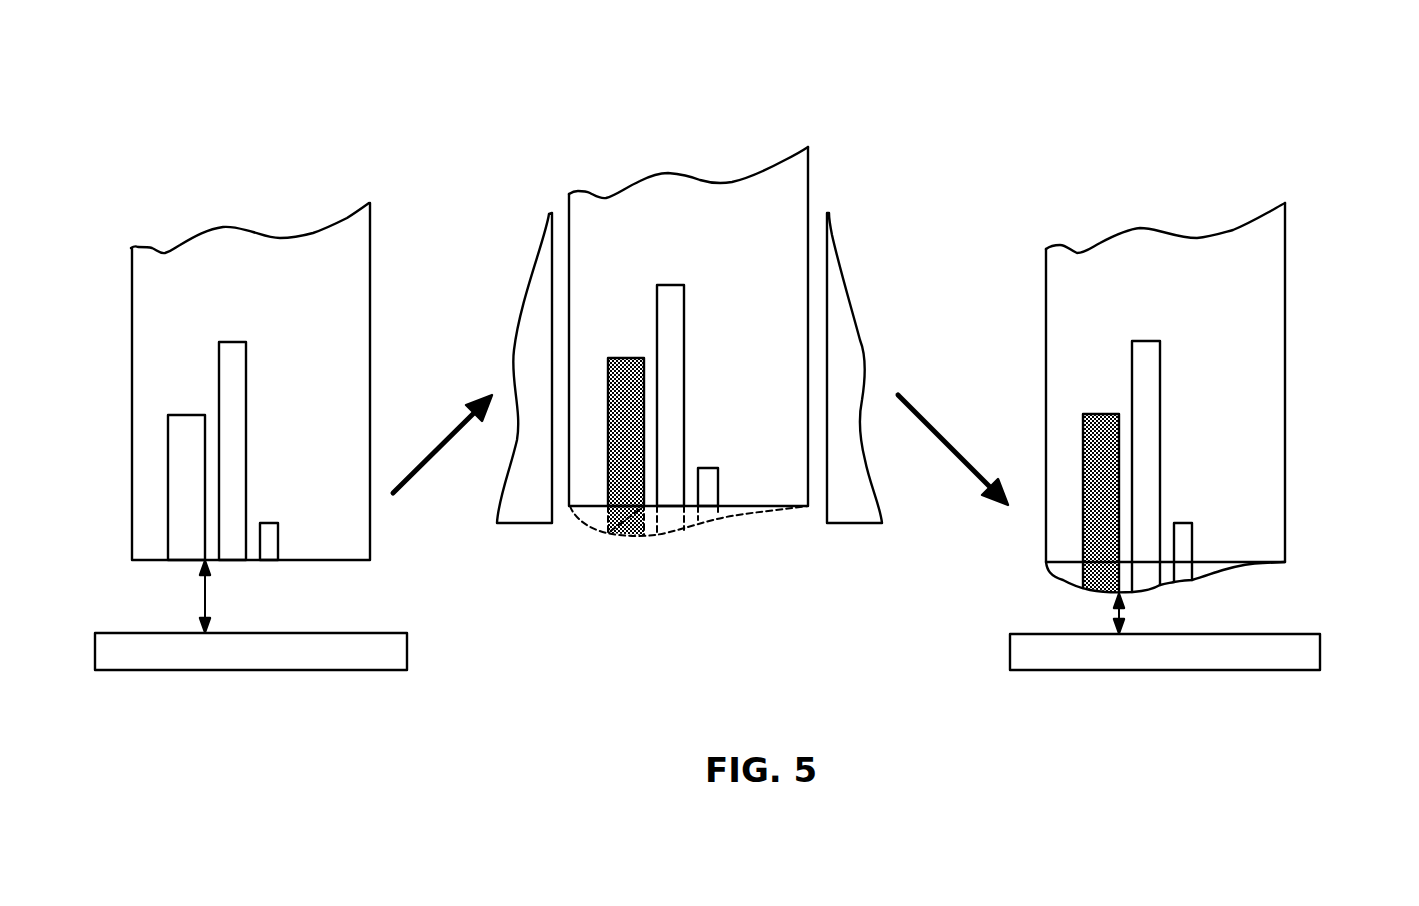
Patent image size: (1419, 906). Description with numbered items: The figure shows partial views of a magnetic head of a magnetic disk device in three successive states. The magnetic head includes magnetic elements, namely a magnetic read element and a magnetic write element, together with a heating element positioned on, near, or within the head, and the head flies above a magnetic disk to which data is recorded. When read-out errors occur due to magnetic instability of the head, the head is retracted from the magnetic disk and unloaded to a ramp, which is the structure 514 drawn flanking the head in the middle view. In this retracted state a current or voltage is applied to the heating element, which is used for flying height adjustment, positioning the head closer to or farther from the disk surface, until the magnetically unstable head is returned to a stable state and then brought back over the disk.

The clamp plate 514 is at (842, 310).